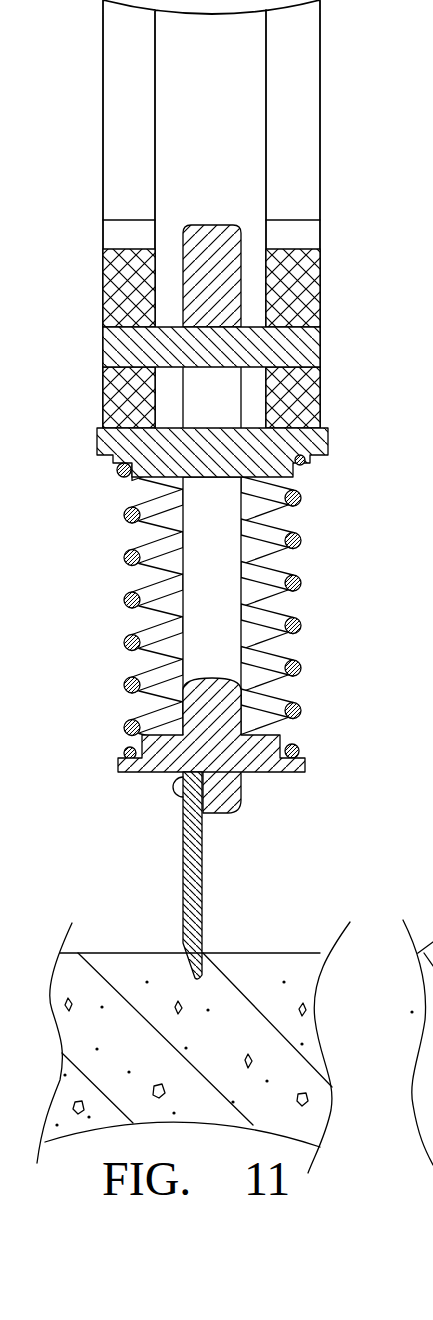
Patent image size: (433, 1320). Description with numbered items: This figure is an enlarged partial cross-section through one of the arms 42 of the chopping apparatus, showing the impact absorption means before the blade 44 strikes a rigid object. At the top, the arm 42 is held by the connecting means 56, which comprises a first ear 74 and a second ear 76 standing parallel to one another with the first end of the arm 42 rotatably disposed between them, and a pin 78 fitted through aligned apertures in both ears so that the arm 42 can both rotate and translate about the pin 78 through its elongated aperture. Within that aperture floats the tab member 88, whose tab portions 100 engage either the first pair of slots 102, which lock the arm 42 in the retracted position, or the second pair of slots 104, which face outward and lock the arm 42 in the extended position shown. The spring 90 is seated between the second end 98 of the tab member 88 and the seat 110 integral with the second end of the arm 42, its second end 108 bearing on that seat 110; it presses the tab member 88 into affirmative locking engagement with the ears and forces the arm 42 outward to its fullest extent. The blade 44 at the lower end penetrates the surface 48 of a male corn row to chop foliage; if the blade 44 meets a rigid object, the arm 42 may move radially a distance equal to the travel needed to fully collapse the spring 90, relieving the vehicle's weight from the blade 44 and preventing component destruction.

The connecting means 56 is at (330, 208).
The first pair of slots 102 is at (102, 230).
The second pair of slots 104 is at (318, 230).
The first ear 74 is at (102, 282).
The second ear 76 is at (310, 287).
The arm 42 is at (235, 318).
The pin 78 is at (318, 350).
The tab member 88 is at (97, 432).
The second end of the tab member 98 is at (105, 458).
The tab portions 100 is at (307, 470).
The spring 90 is at (300, 578).
The second end of the spring 108 is at (295, 748).
The seat 110 is at (290, 772).
The blade 44 is at (203, 937).
The surface 48 is at (98, 953).